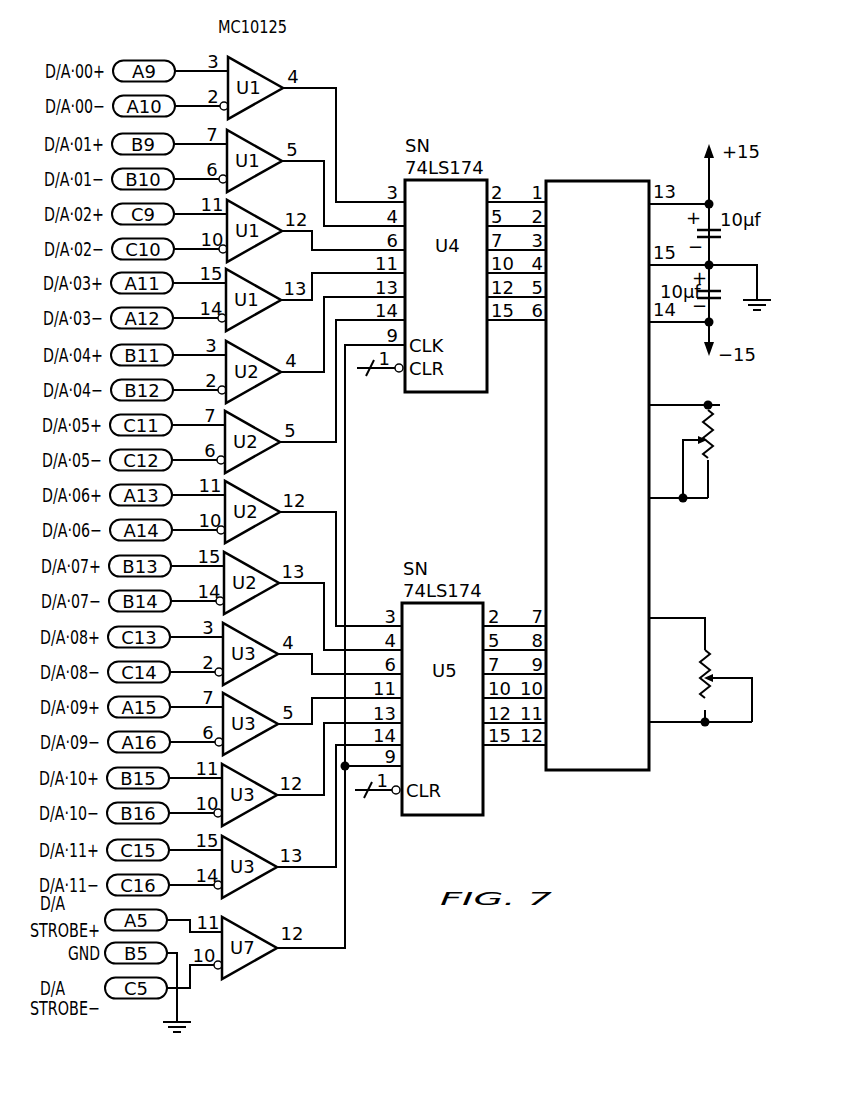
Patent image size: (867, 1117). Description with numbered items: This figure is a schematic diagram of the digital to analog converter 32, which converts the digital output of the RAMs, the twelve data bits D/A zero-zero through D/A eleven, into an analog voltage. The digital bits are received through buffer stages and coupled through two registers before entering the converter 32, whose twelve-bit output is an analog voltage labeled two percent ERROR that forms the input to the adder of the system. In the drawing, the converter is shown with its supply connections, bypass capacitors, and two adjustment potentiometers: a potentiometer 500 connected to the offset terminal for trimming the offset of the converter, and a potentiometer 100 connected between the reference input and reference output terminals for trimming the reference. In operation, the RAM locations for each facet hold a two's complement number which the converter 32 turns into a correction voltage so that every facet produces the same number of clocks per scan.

The digital to analog converter 32 is at (592, 181).
The 500 ohm offset adjustment potentiometer 500 is at (717, 442).
The 100 ohm reference adjustment potentiometer 100 is at (700, 661).